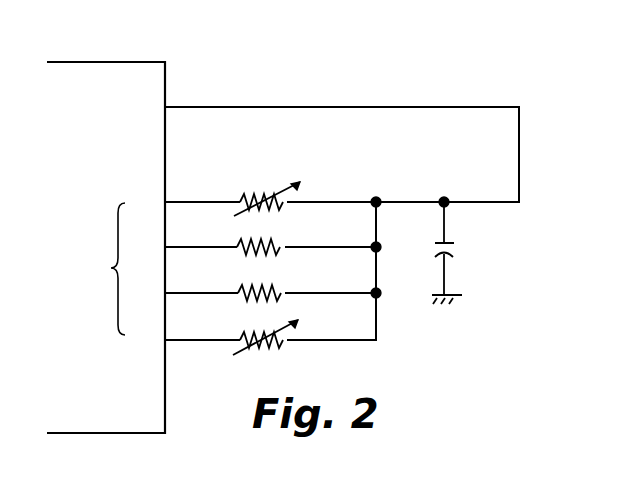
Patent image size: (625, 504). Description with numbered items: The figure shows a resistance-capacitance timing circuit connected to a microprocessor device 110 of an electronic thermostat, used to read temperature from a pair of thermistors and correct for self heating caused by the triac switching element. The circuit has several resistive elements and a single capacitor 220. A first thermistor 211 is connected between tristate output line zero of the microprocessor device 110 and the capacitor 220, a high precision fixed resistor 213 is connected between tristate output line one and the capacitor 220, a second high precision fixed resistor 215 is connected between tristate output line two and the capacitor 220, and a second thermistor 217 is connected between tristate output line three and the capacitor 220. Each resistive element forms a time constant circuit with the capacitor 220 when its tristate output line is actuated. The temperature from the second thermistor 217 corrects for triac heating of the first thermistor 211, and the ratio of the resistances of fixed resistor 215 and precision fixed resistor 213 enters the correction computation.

The microprocessor device 110 is at (113, 62).
The thermistor 211 is at (245, 199).
The high precision fixed resistor 213 is at (238, 246).
The second high precision fixed resistor 215 is at (238, 292).
The second thermistor 217 is at (243, 340).
The capacitor 220 is at (452, 244).